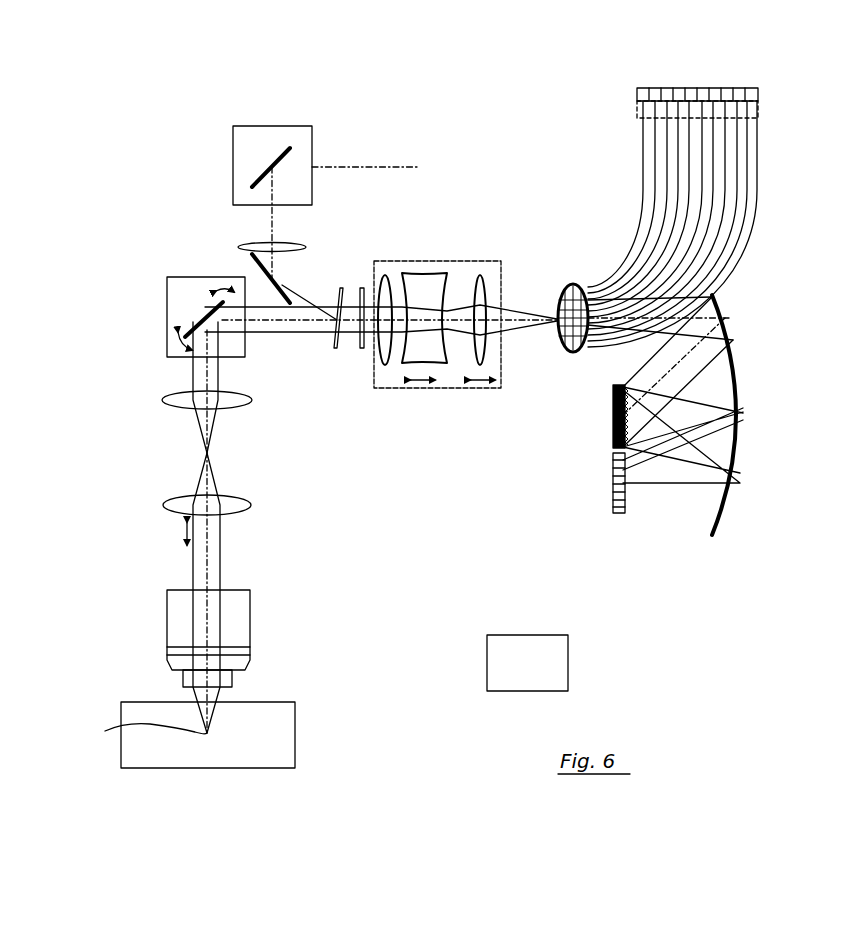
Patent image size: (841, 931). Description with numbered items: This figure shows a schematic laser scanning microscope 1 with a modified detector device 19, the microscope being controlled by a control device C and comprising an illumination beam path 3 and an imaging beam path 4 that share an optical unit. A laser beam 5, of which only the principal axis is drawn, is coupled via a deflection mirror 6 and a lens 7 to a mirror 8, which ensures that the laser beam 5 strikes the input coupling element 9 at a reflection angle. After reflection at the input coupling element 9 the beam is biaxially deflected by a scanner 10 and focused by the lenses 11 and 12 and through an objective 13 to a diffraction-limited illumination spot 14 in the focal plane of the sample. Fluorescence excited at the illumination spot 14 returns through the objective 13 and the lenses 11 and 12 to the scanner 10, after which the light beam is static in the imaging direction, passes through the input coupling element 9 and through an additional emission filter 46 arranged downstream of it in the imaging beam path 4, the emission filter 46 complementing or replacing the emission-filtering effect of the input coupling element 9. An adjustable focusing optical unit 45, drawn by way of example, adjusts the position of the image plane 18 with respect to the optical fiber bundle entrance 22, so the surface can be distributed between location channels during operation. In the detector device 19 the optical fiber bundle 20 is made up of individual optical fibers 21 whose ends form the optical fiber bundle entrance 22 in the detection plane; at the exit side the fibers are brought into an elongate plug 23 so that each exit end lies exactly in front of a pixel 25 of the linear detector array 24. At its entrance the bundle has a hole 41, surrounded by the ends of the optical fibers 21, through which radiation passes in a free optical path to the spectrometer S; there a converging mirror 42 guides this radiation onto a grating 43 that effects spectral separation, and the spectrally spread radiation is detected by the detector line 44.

The laser scanning microscope 1 is at (352, 622).
The illumination beam path 3 is at (205, 178).
The imaging beam path 4 is at (446, 230).
The laser beam 5 is at (417, 167).
The deflection mirror 6 is at (270, 126).
The lens 7 is at (300, 247).
The mirror 8 is at (250, 262).
The input coupling element 9 is at (334, 341).
The scanner 10 is at (175, 316).
The lens 11 is at (178, 402).
The lens 12 is at (176, 506).
The objective 13 is at (170, 630).
The illumination spot 14 is at (178, 735).
The image plane 18 is at (572, 352).
The detector device 19 is at (598, 226).
The optical fiber bundle 20 is at (685, 185).
The optical fibers 21 is at (757, 200).
The optical fiber bundle entrance 22 is at (568, 282).
The plug 23 is at (637, 108).
The detector array 24 is at (758, 96).
The pixel 25 is at (642, 84).
The hole 41 is at (558, 330).
The converging mirror 42 is at (745, 380).
The grating 43 is at (612, 430).
The detector line 44 is at (608, 512).
The zoom housing 45 is at (386, 388).
The emission filter 46 is at (360, 352).
The spectrometer S is at (548, 512).
The control device C is at (568, 635).